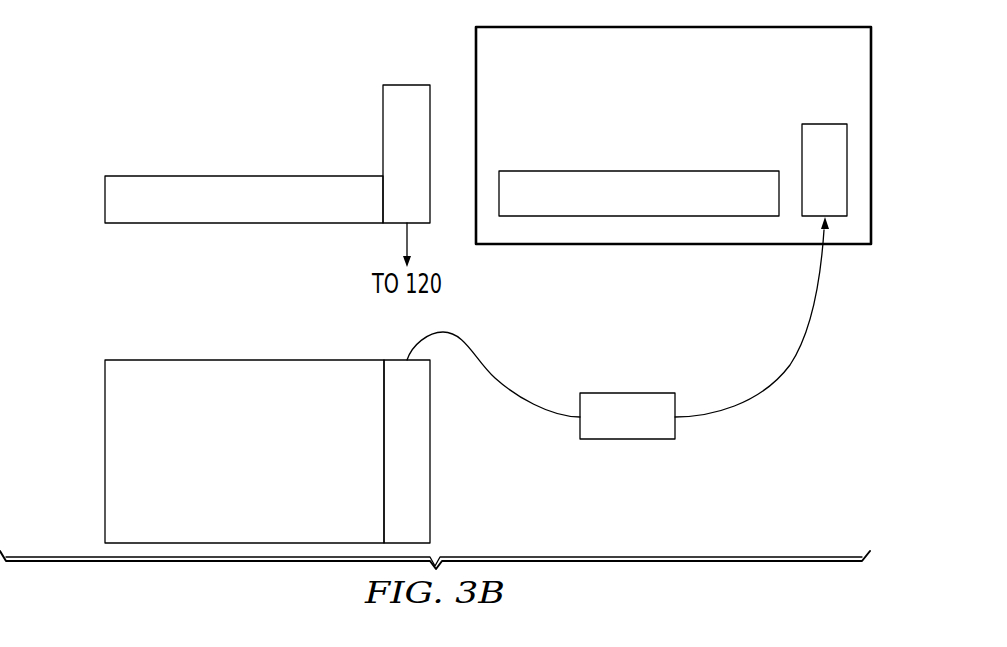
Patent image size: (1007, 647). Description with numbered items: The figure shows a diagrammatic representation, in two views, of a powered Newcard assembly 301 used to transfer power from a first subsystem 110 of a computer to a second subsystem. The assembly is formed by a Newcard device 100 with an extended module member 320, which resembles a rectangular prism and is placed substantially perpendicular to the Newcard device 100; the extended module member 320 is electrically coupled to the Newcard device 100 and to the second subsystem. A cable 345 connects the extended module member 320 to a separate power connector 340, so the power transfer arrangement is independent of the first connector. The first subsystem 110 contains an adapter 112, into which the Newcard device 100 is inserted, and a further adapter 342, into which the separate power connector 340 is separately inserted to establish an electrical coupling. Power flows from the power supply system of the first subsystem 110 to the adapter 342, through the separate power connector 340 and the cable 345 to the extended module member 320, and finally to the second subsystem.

The powered Newcard assembly 301 is at (145, 76).
The Newcard device 100 is at (105, 197).
The extended module member 320 is at (383, 137).
The first subsystem 110 is at (694, 258).
The adapter 112 is at (557, 171).
The adapter 342 is at (825, 123).
The separate power connector 340 is at (627, 440).
The cable 345 is at (487, 370).